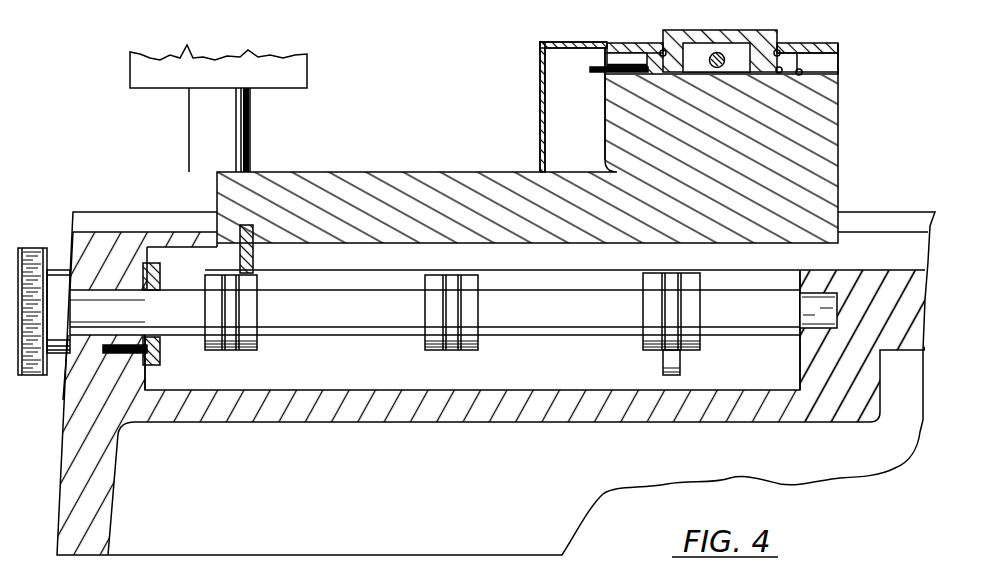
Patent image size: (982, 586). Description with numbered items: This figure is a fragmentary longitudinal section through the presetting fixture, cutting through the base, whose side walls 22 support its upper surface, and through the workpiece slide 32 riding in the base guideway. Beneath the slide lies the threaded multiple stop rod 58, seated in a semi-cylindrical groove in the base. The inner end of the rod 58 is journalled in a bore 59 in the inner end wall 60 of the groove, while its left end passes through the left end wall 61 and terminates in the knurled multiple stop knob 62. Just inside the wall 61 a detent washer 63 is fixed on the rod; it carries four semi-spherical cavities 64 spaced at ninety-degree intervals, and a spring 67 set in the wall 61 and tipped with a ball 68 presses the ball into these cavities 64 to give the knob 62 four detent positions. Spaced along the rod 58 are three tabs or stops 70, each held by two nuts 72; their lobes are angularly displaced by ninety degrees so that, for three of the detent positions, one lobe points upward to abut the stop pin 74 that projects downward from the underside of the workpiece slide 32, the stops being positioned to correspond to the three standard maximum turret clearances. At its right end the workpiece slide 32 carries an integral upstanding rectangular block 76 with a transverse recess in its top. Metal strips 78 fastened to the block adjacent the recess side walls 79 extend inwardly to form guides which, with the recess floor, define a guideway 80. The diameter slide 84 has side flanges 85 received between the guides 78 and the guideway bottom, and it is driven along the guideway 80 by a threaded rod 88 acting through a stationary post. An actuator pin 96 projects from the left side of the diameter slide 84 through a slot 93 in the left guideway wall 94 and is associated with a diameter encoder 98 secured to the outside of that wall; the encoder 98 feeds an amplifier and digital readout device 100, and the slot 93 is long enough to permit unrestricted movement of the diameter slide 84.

The side walls 22 is at (60, 490).
The workpiece slide 32 is at (372, 146).
The multiple stop rod 58 is at (378, 330).
The bore 59 is at (805, 312).
The inner end wall 60 is at (810, 372).
The left end wall 61 is at (72, 393).
The multiple stop knob 62 is at (40, 250).
The detent washer 63 is at (162, 276).
The semi-spherical cavities 64 is at (152, 338).
The spring 67 is at (125, 377).
The ball 68 is at (145, 344).
The stops 70 is at (230, 340).
The nuts 72 is at (214, 352).
The stop pin 74 is at (256, 250).
The rectangular block 76 is at (832, 145).
The metal strips 78 is at (666, 77).
The side walls 79 is at (840, 62).
The guideway 80 is at (780, 73).
The diameter slide 84 is at (718, 70).
The side flanges 85 is at (663, 57).
The threaded rod 88 is at (712, 72).
The slot 93 is at (608, 112).
The left guideway wall 94 is at (610, 77).
The actuator pin 96 is at (590, 68).
The diameter encoder 98 is at (548, 155).
The amplifier and digital readout device 100 is at (137, 66).